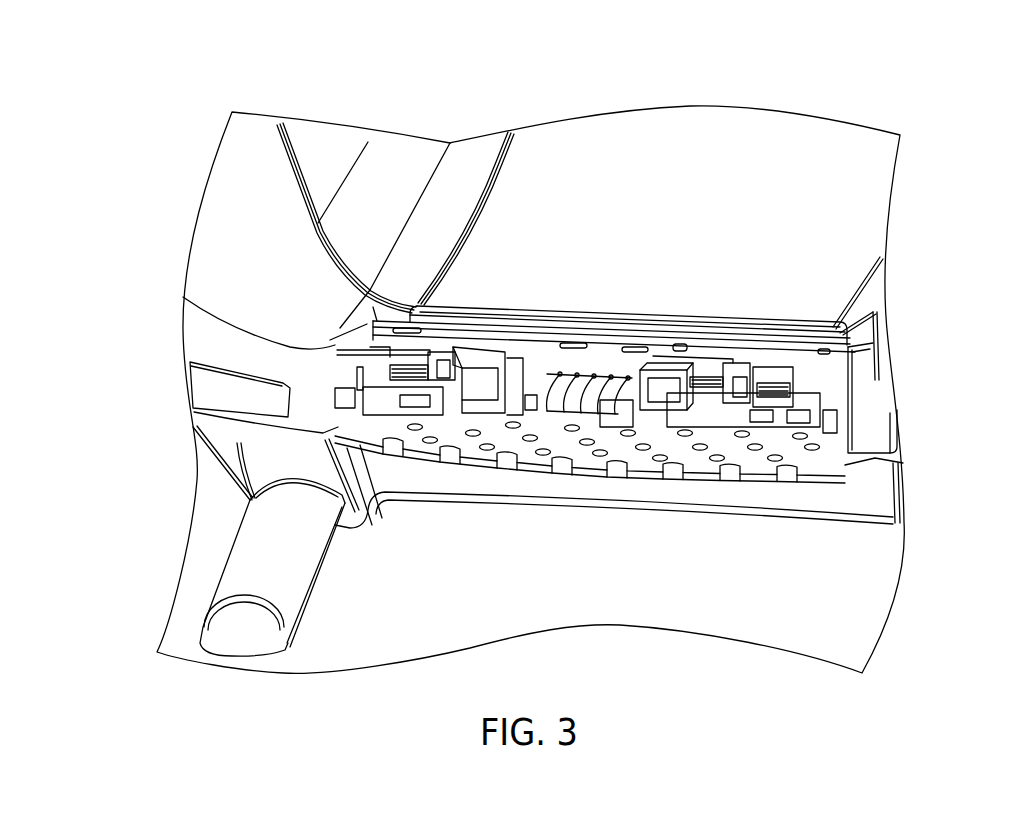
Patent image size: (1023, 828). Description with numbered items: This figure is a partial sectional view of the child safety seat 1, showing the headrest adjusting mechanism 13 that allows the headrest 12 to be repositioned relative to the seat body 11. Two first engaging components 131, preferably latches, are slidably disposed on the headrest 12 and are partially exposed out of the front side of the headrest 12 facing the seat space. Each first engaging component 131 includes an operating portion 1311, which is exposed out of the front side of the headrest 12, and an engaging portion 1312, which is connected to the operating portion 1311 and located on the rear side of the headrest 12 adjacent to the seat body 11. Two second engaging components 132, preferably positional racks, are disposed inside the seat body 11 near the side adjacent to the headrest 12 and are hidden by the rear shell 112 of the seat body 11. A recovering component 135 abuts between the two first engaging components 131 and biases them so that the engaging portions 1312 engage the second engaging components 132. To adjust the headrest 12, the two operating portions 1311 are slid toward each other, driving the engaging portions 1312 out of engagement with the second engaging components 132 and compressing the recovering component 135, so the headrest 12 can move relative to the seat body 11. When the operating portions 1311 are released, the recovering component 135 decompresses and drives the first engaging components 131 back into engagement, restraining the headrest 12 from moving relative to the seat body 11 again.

The child safety seat 1 is at (940, 125).
The seat body 11 is at (182, 453).
The rear shell 112 is at (477, 463).
The headrest 12 is at (362, 345).
The headrest adjusting mechanism 13 is at (683, 192).
The first engaging component 131 is at (602, 250).
The operating portion 1311 is at (513, 377).
The engaging portion 1312 is at (363, 378).
The second engaging component 132 is at (345, 376).
The recovering component 135 is at (610, 370).